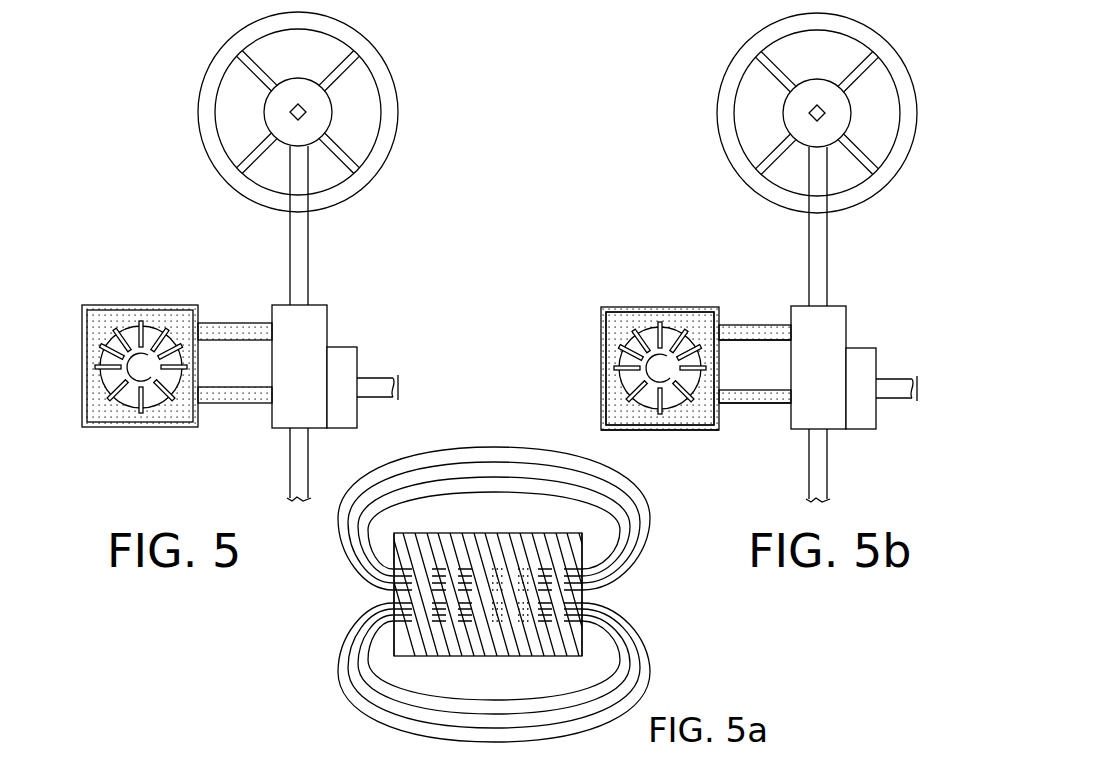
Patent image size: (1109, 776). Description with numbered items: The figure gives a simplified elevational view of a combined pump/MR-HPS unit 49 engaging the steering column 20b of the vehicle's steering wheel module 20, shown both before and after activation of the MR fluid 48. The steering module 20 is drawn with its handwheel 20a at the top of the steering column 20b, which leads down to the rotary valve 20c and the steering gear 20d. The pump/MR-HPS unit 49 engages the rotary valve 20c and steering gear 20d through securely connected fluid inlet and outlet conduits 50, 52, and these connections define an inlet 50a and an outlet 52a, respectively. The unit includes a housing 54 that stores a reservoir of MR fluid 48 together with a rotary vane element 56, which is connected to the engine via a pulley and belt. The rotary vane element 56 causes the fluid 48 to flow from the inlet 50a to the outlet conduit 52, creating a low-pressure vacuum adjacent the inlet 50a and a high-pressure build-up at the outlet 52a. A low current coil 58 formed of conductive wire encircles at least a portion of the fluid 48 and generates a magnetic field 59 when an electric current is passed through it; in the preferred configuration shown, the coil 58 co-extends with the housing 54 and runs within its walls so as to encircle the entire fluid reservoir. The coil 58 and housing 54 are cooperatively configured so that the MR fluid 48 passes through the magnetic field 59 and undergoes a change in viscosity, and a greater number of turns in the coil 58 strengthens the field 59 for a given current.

In FIG. 5, the steering wheel module 20 is at (289, 256).
In FIG. 5, the handwheel 20a is at (362, 185).
In FIG. 5, the steering column 20b is at (308, 234).
In FIG. 5, the rotary valve 20c is at (327, 312).
In FIG. 5, the steering gear 20d is at (357, 357).
In FIG. 5, the MR fluid 48 is at (184, 316).
In FIG. 5B, the MR fluid 48 is at (697, 321).
In FIG. 5, the pump/MR-HPS unit 49 is at (170, 320).
In FIG. 5B, the fluid inlet conduit 50 is at (740, 325).
In FIG. 5B, the inlet 50a is at (720, 341).
In FIG. 5B, the fluid outlet conduit 52 is at (772, 404).
In FIG. 5B, the outlet 52a is at (720, 404).
In FIG. 5B, the housing 54 is at (600, 316).
In FIG. 5A, the housing 54 is at (392, 593).
In FIG. 5B, the rotary vane element 56 is at (649, 328).
In FIG. 5B, the low current coil 58 is at (661, 430).
In FIG. 5A, the low current coil 58 is at (583, 592).
In FIG. 5A, the magnetic field 59 is at (343, 706).